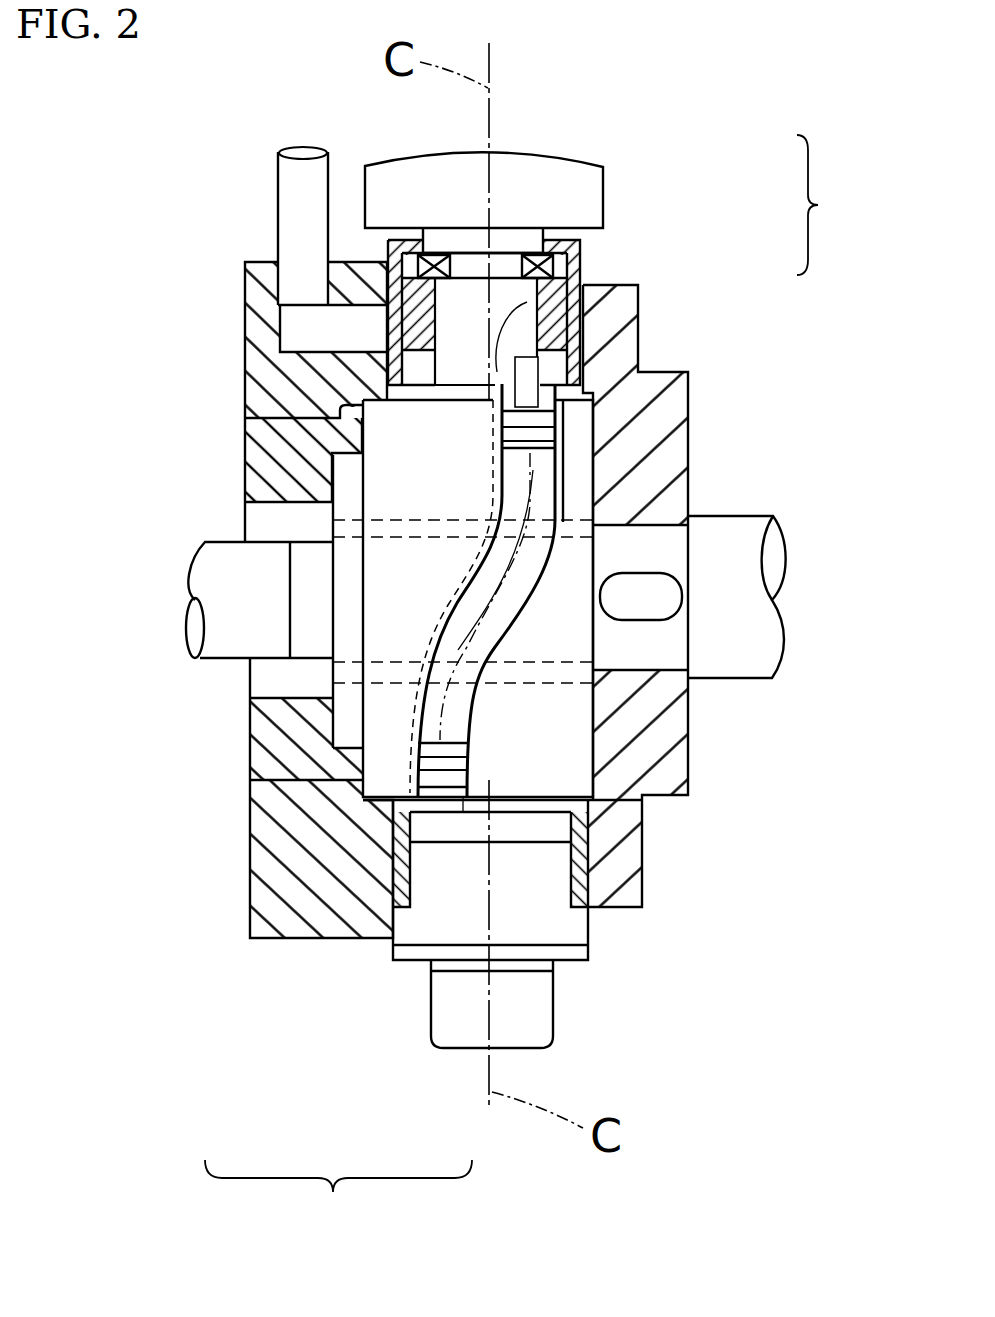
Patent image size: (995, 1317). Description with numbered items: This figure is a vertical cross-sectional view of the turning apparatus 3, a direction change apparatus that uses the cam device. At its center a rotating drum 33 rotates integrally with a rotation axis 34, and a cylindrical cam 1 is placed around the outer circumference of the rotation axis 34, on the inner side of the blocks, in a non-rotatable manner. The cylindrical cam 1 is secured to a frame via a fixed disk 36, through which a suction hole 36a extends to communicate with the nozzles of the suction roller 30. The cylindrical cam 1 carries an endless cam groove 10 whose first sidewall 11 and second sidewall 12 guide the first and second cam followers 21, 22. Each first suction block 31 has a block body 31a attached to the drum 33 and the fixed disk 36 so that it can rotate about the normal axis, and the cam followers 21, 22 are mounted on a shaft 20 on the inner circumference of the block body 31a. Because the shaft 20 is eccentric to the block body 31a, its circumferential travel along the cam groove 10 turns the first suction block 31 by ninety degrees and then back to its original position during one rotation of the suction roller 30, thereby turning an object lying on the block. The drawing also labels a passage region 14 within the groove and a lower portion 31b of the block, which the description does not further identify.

The cylindrical cam 1 is at (397, 615).
The turning apparatus 3 is at (613, 117).
The cam groove 10 is at (480, 567).
The first sidewall 11 is at (450, 596).
The second sidewall 12 is at (533, 602).
The flow passage 14 is at (490, 602).
The shaft 20 is at (582, 287).
The first cam follower 21 is at (500, 417).
The second cam follower 22 is at (500, 435).
The suction roller 30 is at (615, 950).
The first suction block 31 is at (547, 696).
The block body 31a is at (585, 200).
The actuator body 31b is at (443, 790).
The rotating drum 33 is at (670, 396).
The rotation axis 34 is at (757, 660).
The fixed disk 36 is at (260, 450).
The suction hole 36a is at (300, 322).